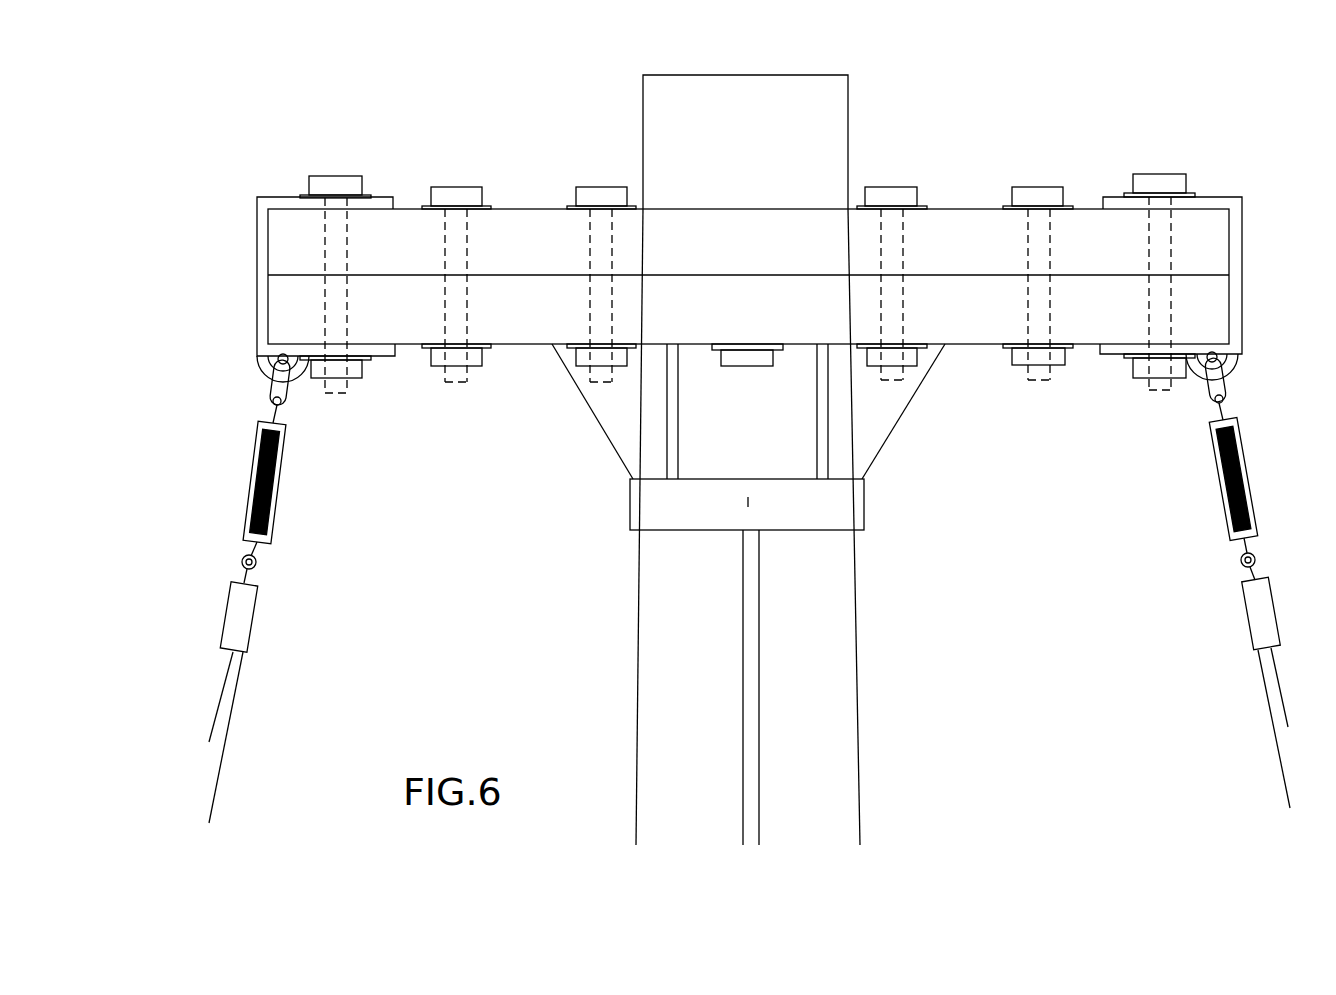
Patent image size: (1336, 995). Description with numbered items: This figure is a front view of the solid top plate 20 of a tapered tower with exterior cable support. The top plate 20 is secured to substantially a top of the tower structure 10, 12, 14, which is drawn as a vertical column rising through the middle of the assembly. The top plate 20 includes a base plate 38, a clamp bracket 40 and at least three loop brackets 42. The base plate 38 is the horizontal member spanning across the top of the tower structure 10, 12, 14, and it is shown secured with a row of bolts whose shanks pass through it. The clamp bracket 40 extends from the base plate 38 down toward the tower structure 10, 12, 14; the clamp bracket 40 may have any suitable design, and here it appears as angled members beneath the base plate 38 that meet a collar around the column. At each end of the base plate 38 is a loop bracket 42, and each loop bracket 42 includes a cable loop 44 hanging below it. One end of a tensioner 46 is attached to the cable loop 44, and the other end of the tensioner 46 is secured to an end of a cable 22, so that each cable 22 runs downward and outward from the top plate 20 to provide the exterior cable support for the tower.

The tower structure 10 is at (865, 460).
The tower structure 12 is at (865, 460).
The tower structure 14 is at (873, 637).
The top plate 20 is at (773, 269).
The cable 22 is at (1268, 685).
The base plate 38 is at (972, 342).
The clamp bracket 40 is at (602, 425).
The loop bracket 42 is at (1205, 190).
The cable loop 44 is at (1198, 383).
The tensioner 46 is at (1223, 493).